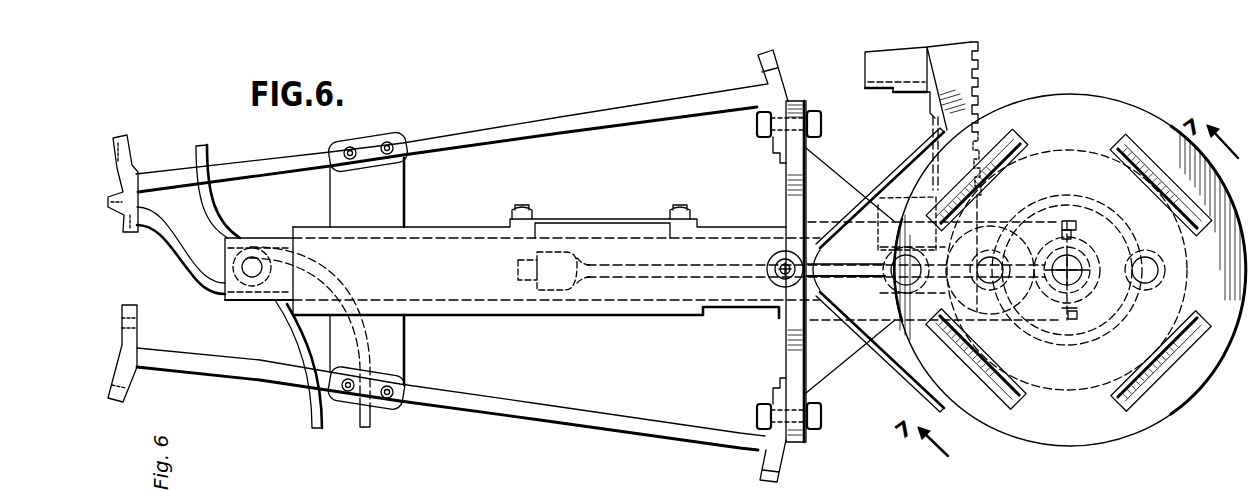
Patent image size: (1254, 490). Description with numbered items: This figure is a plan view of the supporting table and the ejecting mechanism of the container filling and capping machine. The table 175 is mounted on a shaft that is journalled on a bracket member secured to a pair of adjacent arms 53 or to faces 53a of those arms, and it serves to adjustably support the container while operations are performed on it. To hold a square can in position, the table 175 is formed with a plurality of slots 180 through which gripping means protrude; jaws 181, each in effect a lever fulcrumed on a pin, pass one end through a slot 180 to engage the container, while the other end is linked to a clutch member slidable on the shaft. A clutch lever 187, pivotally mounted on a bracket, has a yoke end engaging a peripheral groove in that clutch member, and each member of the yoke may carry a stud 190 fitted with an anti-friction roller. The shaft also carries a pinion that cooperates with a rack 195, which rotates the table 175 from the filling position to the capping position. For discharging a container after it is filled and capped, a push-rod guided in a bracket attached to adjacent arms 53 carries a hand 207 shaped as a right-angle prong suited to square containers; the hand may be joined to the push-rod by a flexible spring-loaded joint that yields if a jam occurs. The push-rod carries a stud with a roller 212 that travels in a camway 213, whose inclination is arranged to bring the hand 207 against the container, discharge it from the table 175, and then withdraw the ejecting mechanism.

The arms 53 is at (497, 128).
The faces of the arms 53a is at (780, 458).
The table 175 is at (1178, 393).
The slots 180 is at (1003, 398).
The jaws 181 is at (1133, 388).
The clutch lever 187 is at (841, 273).
The stud 190 is at (1076, 233).
The rack 195 is at (988, 84).
The hand 207 is at (900, 168).
The roller 212 is at (232, 301).
The camway 213 is at (311, 415).